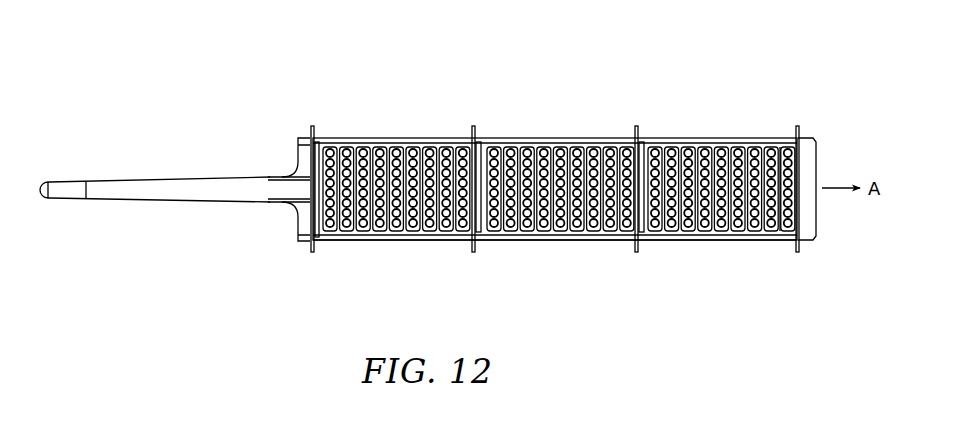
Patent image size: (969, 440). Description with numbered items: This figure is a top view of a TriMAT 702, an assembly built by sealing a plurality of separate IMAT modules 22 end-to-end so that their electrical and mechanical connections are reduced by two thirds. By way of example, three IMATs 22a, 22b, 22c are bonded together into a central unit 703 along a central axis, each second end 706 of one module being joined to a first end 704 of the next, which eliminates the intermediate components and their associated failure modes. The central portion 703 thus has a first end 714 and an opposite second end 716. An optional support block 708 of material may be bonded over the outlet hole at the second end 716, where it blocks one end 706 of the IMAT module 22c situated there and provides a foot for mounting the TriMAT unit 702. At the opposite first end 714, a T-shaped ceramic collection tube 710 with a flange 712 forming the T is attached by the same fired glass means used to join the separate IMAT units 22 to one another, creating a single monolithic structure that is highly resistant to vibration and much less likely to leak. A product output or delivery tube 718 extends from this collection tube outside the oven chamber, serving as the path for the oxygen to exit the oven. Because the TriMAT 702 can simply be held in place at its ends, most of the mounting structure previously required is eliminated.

The TriMAT 702 is at (437, 48).
The first end 704 is at (319, 130).
The second end 706 is at (454, 137).
The IMAT module 22 is at (376, 259).
The first IMAT 22a is at (421, 257).
The second IMAT 22b is at (530, 252).
The third IMAT 22c is at (684, 247).
The central unit 703 is at (571, 247).
The second end 716 is at (769, 247).
The support block 708 is at (815, 168).
The collection tube 710 is at (148, 200).
The flange 712 is at (308, 162).
The first end 714 is at (290, 255).
The product output or delivery tube 718 is at (68, 185).